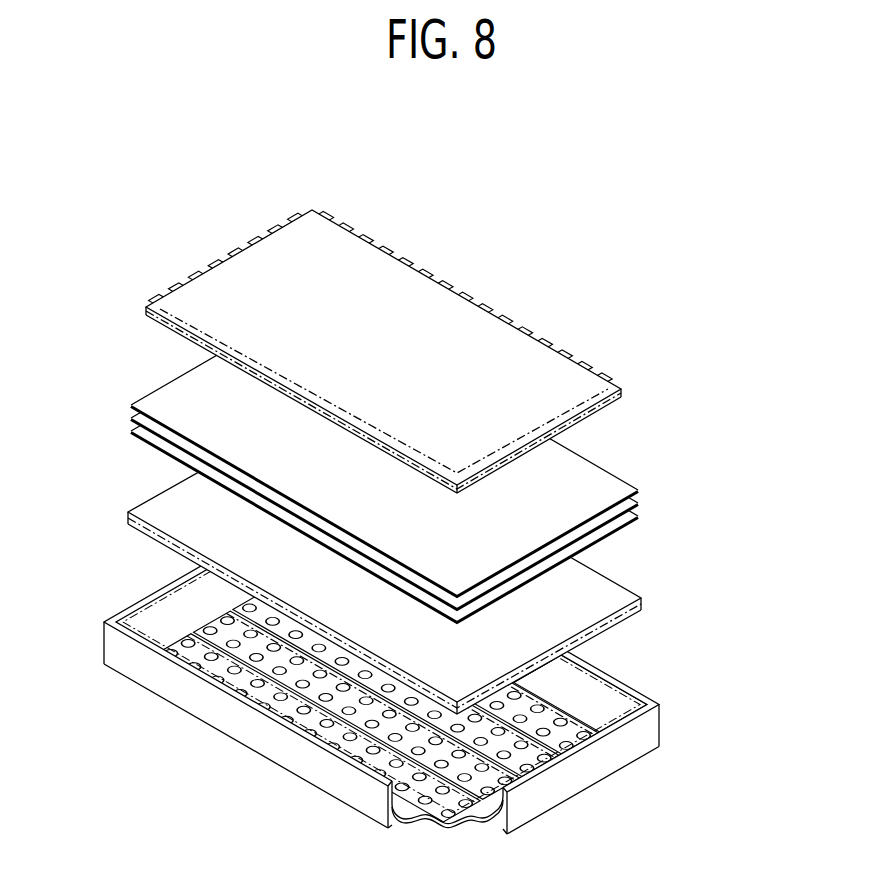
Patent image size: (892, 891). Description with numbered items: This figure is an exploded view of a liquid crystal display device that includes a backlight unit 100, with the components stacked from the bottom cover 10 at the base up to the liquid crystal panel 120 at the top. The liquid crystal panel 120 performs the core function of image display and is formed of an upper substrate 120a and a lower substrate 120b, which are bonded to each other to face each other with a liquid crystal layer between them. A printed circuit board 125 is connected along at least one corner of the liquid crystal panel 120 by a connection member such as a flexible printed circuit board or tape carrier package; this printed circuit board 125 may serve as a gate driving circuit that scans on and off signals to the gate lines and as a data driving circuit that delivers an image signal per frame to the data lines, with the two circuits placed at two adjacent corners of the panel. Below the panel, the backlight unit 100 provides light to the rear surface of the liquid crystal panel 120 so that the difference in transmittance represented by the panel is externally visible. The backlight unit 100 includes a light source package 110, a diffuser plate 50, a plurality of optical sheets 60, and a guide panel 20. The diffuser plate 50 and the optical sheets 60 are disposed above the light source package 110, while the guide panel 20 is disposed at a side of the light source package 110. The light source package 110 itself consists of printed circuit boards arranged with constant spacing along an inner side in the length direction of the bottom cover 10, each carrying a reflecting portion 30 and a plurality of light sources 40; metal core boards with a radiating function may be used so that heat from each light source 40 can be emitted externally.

The bottom cover 10 is at (659, 728).
The guide panel 20 is at (593, 690).
The reflecting portion 30 is at (517, 790).
The light source 40 is at (513, 757).
The diffuser plate 50 is at (640, 605).
The optical sheets 60 is at (425, 462).
The backlight unit 100 is at (446, 593).
The light source package 110 is at (438, 714).
The liquid crystal panel 120 is at (447, 351).
The upper substrate 120a is at (608, 395).
The lower substrate 120b is at (600, 415).
The printed circuit board 125 is at (584, 359).